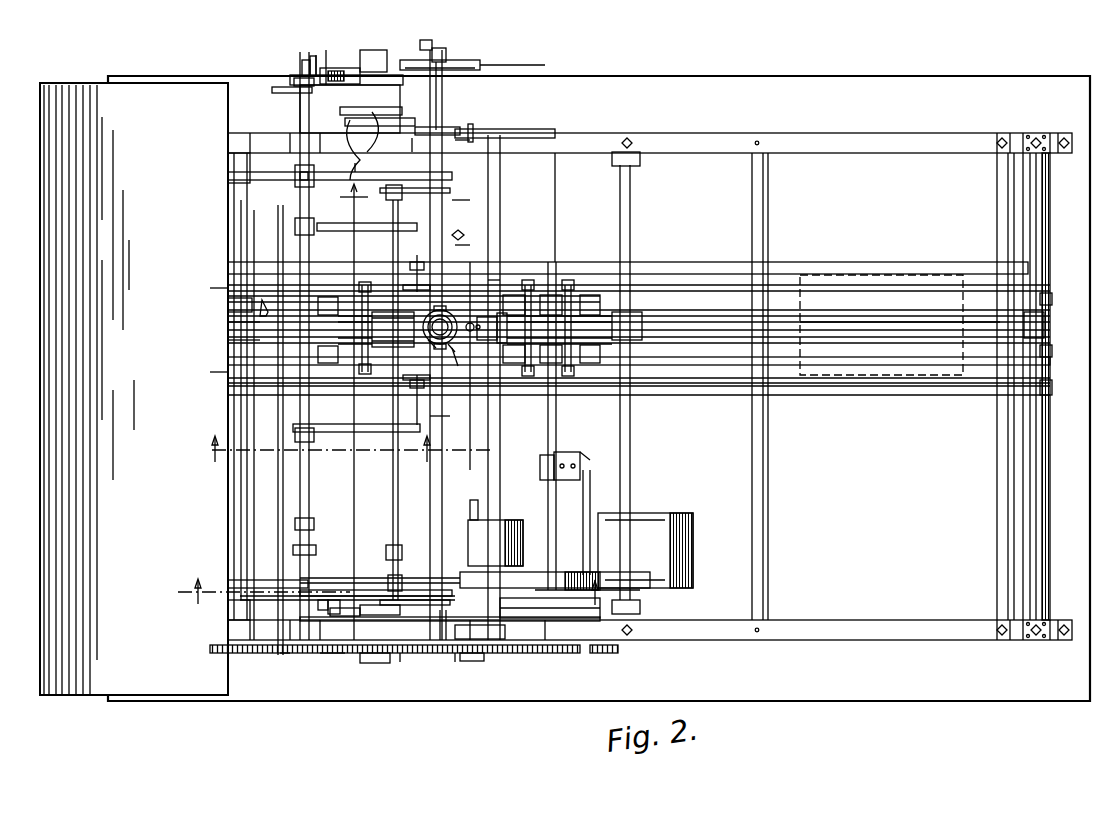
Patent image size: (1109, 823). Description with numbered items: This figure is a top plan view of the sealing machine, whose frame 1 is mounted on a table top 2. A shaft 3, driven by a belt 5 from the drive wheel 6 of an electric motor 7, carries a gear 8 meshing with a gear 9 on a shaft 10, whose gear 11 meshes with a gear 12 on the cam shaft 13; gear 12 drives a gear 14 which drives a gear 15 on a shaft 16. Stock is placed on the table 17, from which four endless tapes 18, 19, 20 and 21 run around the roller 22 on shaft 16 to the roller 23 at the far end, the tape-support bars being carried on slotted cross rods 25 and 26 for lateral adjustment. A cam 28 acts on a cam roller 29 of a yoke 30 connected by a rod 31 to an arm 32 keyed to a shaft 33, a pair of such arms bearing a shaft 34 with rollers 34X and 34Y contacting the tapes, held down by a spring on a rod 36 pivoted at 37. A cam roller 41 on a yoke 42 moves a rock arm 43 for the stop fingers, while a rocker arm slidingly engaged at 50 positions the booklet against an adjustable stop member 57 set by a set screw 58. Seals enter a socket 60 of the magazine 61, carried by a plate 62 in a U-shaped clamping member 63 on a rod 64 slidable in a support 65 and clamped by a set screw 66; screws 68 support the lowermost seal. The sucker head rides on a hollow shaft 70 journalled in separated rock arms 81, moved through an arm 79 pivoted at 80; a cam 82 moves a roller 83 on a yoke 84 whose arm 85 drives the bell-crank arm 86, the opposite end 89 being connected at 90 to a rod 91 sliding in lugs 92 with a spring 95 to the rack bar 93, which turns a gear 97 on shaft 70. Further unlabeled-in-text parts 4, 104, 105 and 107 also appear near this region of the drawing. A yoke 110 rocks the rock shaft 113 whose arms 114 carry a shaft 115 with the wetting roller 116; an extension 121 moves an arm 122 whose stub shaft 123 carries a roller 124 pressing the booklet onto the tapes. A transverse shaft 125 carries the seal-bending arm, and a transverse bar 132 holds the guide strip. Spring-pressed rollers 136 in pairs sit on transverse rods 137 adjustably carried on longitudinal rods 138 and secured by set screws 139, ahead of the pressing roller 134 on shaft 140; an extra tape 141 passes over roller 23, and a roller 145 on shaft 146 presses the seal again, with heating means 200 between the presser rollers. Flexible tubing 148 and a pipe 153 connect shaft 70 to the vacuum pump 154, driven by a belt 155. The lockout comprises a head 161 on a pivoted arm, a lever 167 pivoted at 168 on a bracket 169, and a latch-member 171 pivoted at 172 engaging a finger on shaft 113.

The frame 1 is at (230, 146).
The table top 2 is at (1010, 80).
The shaft 3 is at (550, 624).
The bar 4 is at (550, 606).
The belt 5 is at (450, 629).
The drive wheel 6 is at (323, 100).
The electric motor 7 is at (700, 552).
The gear 8 is at (608, 654).
The gear 9 is at (530, 654).
The shaft 10 is at (476, 661).
The gear 11 is at (455, 667).
The gear 12 is at (405, 666).
The cam shaft 13 is at (368, 664).
The gear 14 is at (295, 653).
The gear 15 is at (198, 660).
The shaft 16 is at (228, 162).
The table or shelf 17 is at (46, 548).
The endless belt or tape 18 is at (240, 390).
The endless belt or tape 19 is at (240, 360).
The endless belt or tape 20 is at (240, 300).
The endless belt or tape 21 is at (240, 268).
The roller 22 is at (232, 213).
The roller 23 is at (1040, 190).
The cross rod 25 is at (766, 530).
The cross rod 26 is at (278, 526).
The cam 28 is at (366, 626).
The cam roller 29 is at (378, 595).
The slidable yoke 30 is at (388, 603).
The rod 31 is at (331, 660).
The arm 32 is at (262, 180).
The shaft 33 is at (310, 170).
The shaft 34 is at (236, 512).
The roller 34X is at (228, 321).
The roller 34Y is at (228, 338).
The rod 36 is at (332, 600).
The pivot 37 is at (317, 589).
The cam roller 41 is at (366, 150).
The yoke 42 is at (387, 134).
The rock arm 43 is at (438, 130).
The sliding engagement 50 is at (462, 349).
The adjustable stop member 57 is at (472, 244).
The set screw 58 is at (470, 229).
The socket 60 is at (484, 317).
The magazine 61 is at (443, 311).
The plate 62 is at (440, 327).
The U-shaped clamping member 63 is at (471, 305).
The rod 64 is at (466, 360).
The support 65 is at (503, 268).
The set screw 66 is at (425, 350).
The screw 68 is at (440, 306).
The hollow shaft 70 is at (446, 54).
The arm 79 is at (450, 190).
The pivotal connection 80 is at (376, 376).
The rock arm 81 is at (446, 618).
The cam 82 is at (443, 80).
The roller 83 is at (345, 68).
The yoke 84 is at (380, 52).
The arm 85 is at (386, 105).
The arm of bell-crank lever 86 is at (272, 90).
The end of bell-crank lever 89 is at (296, 92).
The pivotal connection 90 is at (299, 67).
The rod 91 is at (312, 60).
The lug 92 is at (316, 54).
The rack bar 93 is at (472, 56).
The spring 95 is at (329, 57).
The gear 97 is at (428, 36).
The pin 104 is at (464, 150).
The bar 105 is at (478, 128).
The pin 107 is at (426, 148).
The yoke 110 is at (389, 110).
The rock shaft 113 is at (500, 232).
The arm 114 is at (388, 391).
The shaft 115 is at (393, 240).
The wetting roller 116 is at (383, 350).
The extension 121 is at (393, 225).
The arm 122 is at (350, 224).
The stub shaft 123 is at (418, 255).
The roller 124 is at (408, 323).
The shaft 125 is at (585, 528).
The transverse bar 132 is at (600, 447).
The pressing roller 134 is at (642, 328).
The spring-pressed roller 136 is at (598, 275).
The transverse rod 137 is at (530, 273).
The longitudinal rod 138 is at (722, 286).
The set screw 139 is at (360, 376).
The shaft 140 is at (632, 210).
The endless band or tape 141 is at (855, 308).
The roller 145 is at (1044, 324).
The shaft 146 is at (1036, 232).
The flexible tubing 148 is at (480, 631).
The pipe 153 is at (466, 505).
The vacuum pump 154 is at (509, 533).
The belt 155 is at (583, 569).
The head 161 is at (259, 304).
The lever 167 is at (548, 440).
The pivot 168 is at (531, 467).
The bracket 169 is at (573, 457).
The latch-member 171 is at (520, 575).
The pivot 172 is at (470, 366).
The heating means 200 is at (836, 386).